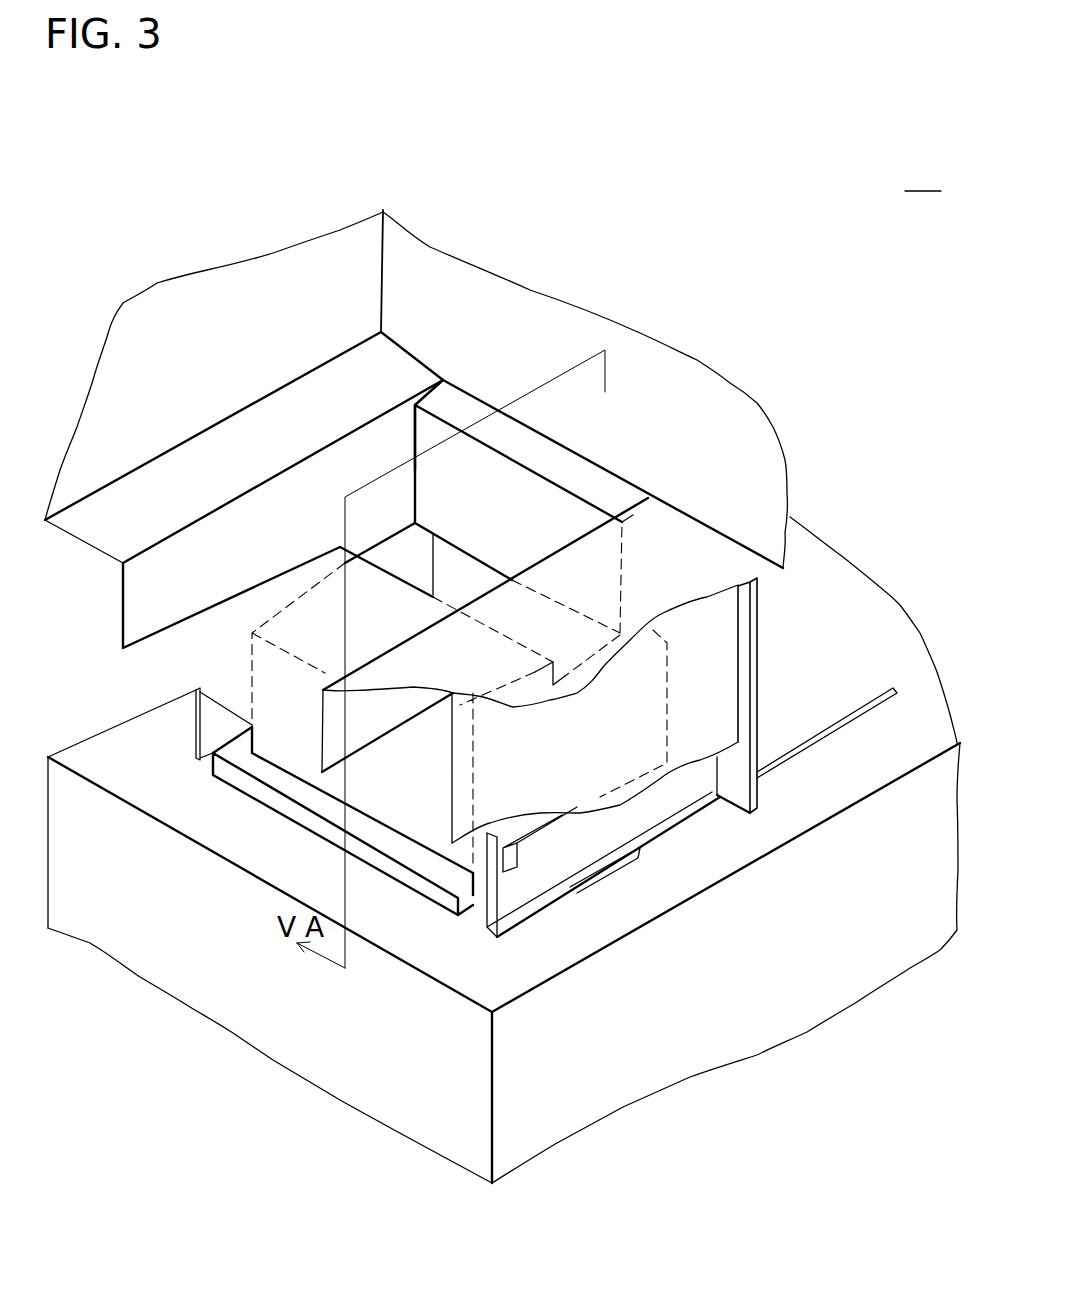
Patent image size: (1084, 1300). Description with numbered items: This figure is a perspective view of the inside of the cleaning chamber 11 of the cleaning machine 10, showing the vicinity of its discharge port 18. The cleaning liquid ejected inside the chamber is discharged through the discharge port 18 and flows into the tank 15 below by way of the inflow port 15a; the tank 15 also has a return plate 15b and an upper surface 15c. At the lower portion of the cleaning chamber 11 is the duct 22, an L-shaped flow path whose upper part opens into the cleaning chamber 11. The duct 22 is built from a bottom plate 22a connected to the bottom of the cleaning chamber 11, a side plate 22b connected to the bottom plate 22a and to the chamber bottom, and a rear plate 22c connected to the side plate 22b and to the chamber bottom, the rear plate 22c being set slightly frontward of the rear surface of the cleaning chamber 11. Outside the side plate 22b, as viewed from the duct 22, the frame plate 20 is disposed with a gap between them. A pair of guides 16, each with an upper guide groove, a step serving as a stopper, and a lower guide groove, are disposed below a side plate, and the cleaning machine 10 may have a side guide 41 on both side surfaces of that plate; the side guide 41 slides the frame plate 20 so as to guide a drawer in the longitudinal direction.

The cleaning machine 10 is at (924, 177).
The cleaning chamber 11 is at (646, 334).
The tank 15 is at (155, 853).
The inflow port 15a is at (253, 743).
The return plate 15b is at (330, 812).
The upper surface 15c is at (858, 578).
The guide 16 is at (798, 745).
The discharge port 18 is at (453, 568).
The frame plate 20 is at (740, 660).
The duct 22 is at (297, 333).
The bottom plate 22a is at (213, 607).
The side plate 22b is at (258, 500).
The rear plate 22c is at (415, 437).
The side guide 41 is at (553, 845).